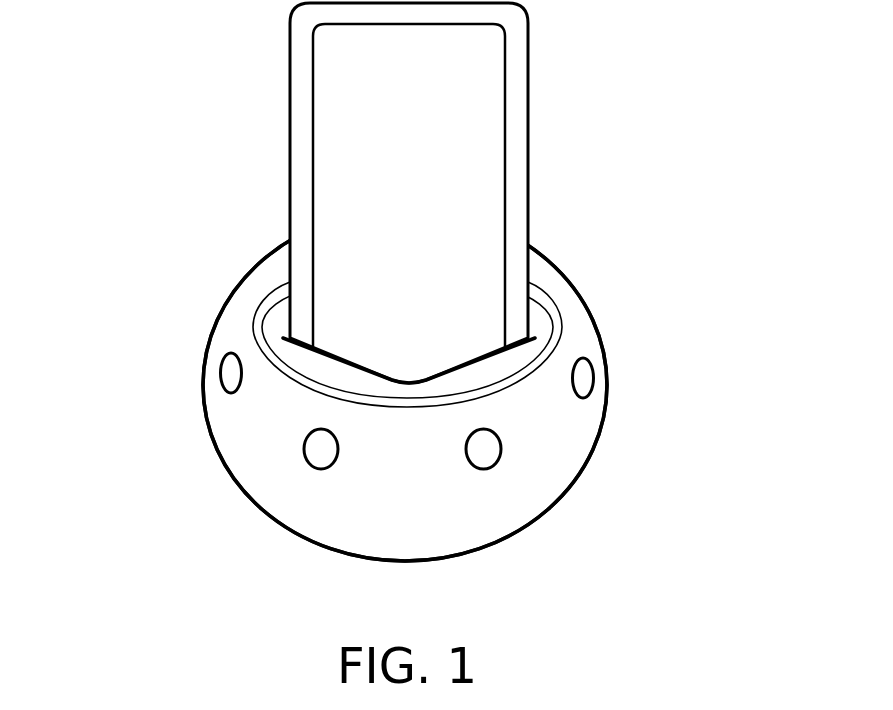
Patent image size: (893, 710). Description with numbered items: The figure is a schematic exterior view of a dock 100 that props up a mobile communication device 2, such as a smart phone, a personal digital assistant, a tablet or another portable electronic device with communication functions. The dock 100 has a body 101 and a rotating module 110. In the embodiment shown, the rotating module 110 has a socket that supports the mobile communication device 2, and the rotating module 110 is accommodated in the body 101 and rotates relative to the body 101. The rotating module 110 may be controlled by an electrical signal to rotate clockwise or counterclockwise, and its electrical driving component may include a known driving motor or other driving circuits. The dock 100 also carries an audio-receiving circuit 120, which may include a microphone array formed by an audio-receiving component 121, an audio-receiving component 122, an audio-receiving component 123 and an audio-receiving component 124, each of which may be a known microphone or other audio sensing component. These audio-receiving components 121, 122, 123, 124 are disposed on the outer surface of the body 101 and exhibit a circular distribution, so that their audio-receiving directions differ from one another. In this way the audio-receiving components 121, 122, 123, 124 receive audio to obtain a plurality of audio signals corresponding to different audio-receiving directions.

The mobile communication device 2 is at (528, 107).
The dock 100 is at (583, 290).
The body 101 is at (585, 335).
The rotating module 110 is at (538, 318).
The audio-receiving circuit 120 is at (397, 415).
The audio-receiving component 121 is at (583, 378).
The audio-receiving component 122 is at (483, 449).
The audio-receiving component 123 is at (320, 449).
The audio-receiving component 124 is at (231, 373).